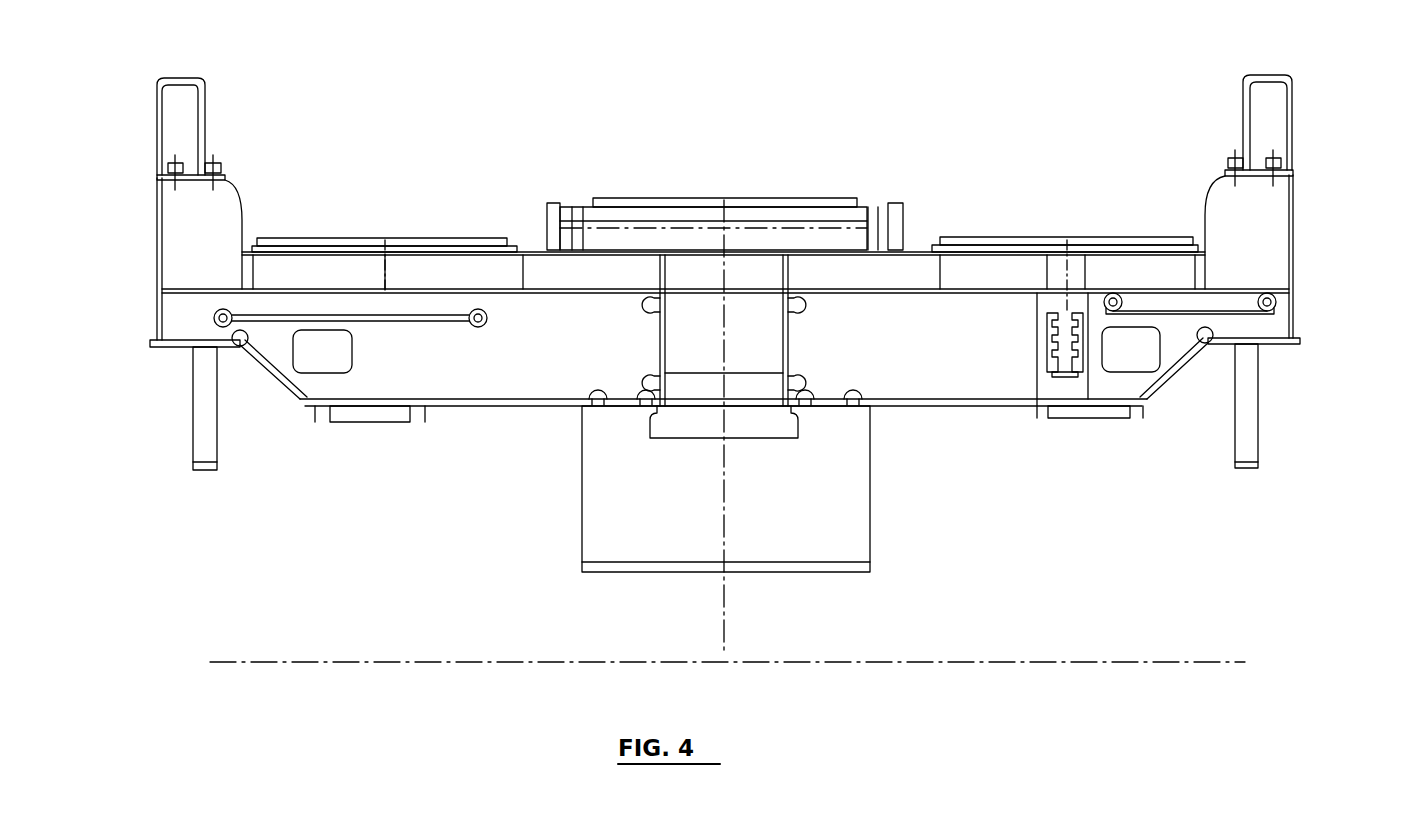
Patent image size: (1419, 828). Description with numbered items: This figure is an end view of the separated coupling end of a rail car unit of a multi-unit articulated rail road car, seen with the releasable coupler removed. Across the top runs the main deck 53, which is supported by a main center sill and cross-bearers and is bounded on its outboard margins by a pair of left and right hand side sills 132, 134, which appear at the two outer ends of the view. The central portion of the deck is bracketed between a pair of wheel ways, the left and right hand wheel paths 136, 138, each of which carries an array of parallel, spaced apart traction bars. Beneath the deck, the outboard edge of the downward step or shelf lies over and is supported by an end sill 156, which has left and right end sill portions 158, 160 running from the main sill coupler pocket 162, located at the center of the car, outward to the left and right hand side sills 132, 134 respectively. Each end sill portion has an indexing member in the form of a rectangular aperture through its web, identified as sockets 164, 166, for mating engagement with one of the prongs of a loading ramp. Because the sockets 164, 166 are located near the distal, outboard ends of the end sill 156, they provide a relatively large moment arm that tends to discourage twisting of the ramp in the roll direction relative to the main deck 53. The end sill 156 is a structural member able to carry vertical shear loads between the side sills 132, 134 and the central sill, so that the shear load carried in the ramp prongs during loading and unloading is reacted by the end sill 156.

The main deck 53 is at (693, 200).
The left hand side sill 132 is at (157, 275).
The right hand side sill 134 is at (1296, 246).
The left hand wheel path 136 is at (337, 237).
The right hand wheel path 138 is at (1028, 237).
The end sill 156 is at (493, 377).
The left end sill portion 158 is at (388, 375).
The right end sill portion 160 is at (967, 375).
The main sill coupler pocket 162 is at (695, 358).
The socket 164 is at (305, 360).
The socket 166 is at (1143, 352).